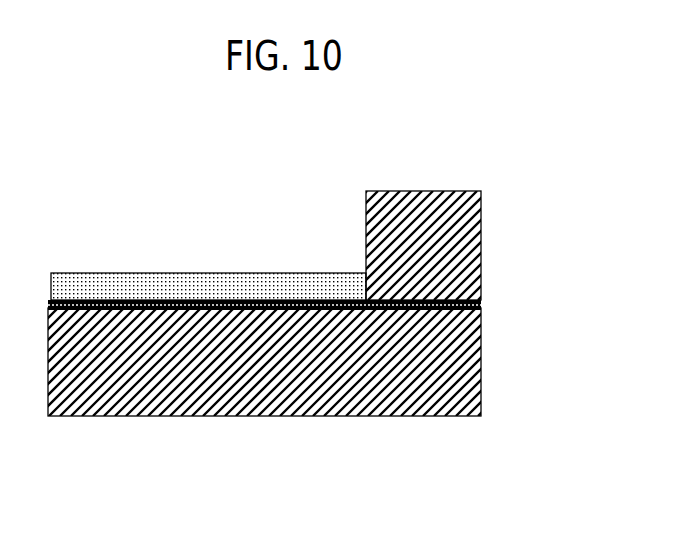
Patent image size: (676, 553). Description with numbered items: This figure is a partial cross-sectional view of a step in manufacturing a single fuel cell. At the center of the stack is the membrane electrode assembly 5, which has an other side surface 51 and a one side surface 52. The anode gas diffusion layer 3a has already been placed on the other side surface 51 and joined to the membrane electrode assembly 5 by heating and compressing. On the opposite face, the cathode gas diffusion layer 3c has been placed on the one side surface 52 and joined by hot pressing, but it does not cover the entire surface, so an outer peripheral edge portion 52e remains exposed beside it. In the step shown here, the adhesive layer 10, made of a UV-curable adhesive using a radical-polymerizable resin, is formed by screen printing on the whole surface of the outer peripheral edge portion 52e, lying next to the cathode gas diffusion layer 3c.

The adhesive layer 10 is at (297, 323).
The anode gas diffusion layer 3a is at (452, 357).
The cathode gas diffusion layer 3c is at (453, 195).
The membrane electrode assembly 5 is at (315, 305).
The other side surface 51 is at (395, 302).
The one side surface 52 is at (444, 292).
The outer peripheral edge portion 52e is at (259, 266).